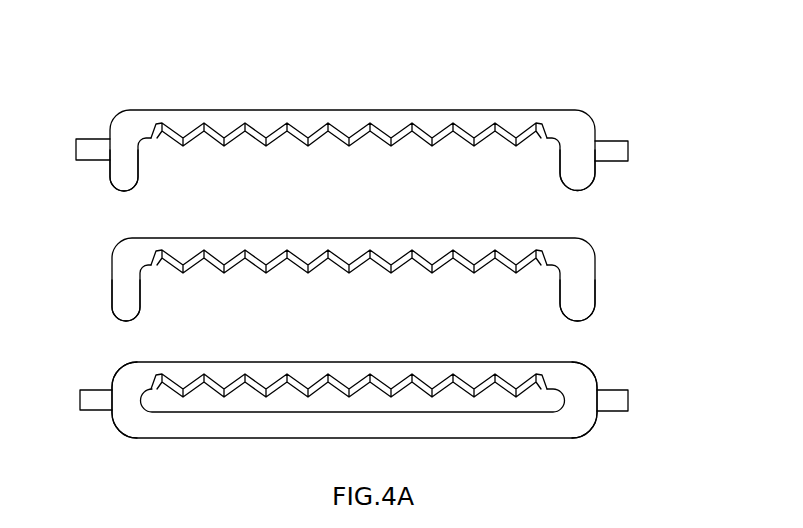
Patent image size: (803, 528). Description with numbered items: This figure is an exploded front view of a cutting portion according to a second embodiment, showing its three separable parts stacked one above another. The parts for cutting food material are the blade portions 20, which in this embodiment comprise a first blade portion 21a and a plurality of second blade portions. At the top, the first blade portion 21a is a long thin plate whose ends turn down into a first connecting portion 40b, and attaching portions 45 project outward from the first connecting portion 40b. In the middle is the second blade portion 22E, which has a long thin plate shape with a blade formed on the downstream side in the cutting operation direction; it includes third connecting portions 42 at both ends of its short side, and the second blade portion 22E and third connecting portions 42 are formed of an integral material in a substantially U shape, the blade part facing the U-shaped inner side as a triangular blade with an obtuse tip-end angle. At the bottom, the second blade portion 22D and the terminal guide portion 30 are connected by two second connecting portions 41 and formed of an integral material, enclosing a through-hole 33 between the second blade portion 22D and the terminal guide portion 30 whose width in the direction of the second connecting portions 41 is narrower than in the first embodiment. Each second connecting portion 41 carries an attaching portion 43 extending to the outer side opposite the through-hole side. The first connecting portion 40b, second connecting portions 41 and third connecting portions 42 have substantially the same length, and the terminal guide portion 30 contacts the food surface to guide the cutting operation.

The blade portions 20 is at (235, 120).
The first blade portion 21a is at (350, 108).
The first connecting portion 40b is at (133, 138).
The attaching portions 45 is at (78, 152).
The second blade portion 22E is at (350, 253).
The third connecting portions 42 is at (122, 287).
The second blade portion 22D is at (360, 409).
The attaching portion 43 is at (85, 403).
The second connecting portions 41 is at (128, 415).
The through-hole 33 is at (238, 398).
The terminal guide portion 30 is at (420, 428).